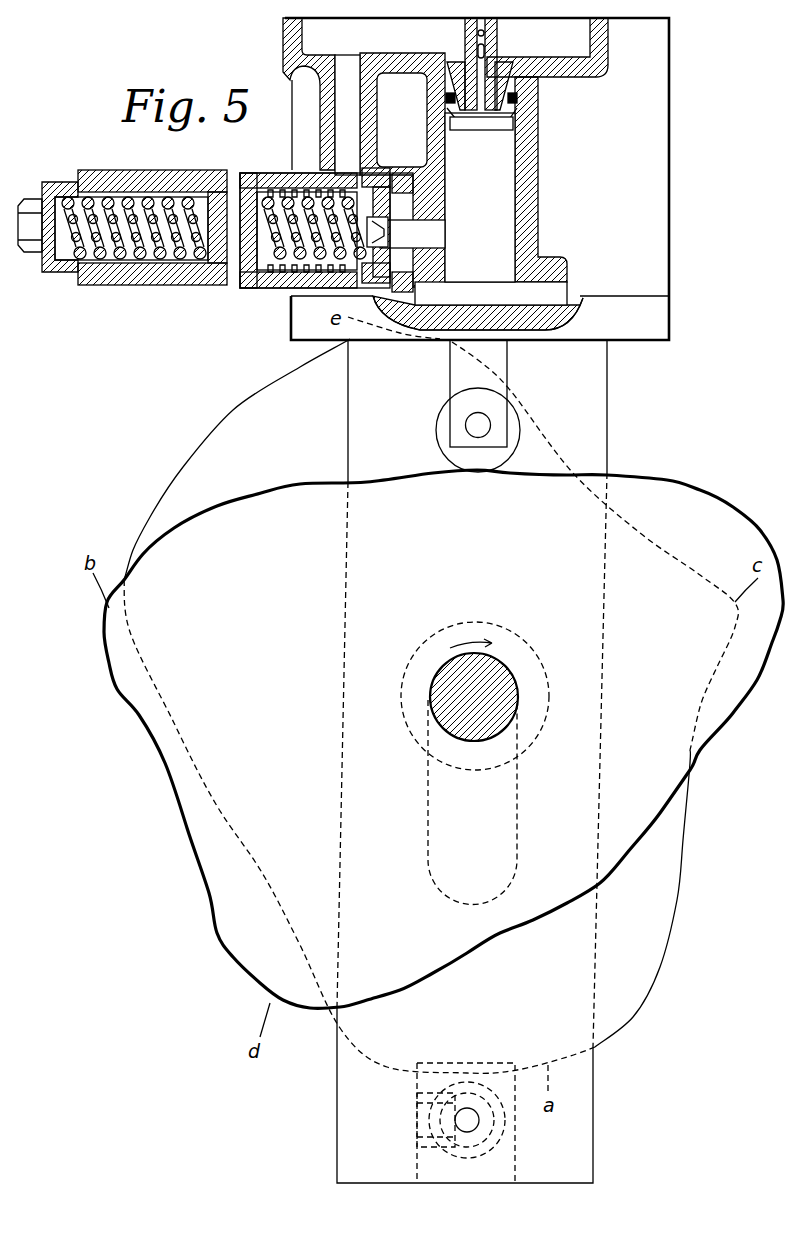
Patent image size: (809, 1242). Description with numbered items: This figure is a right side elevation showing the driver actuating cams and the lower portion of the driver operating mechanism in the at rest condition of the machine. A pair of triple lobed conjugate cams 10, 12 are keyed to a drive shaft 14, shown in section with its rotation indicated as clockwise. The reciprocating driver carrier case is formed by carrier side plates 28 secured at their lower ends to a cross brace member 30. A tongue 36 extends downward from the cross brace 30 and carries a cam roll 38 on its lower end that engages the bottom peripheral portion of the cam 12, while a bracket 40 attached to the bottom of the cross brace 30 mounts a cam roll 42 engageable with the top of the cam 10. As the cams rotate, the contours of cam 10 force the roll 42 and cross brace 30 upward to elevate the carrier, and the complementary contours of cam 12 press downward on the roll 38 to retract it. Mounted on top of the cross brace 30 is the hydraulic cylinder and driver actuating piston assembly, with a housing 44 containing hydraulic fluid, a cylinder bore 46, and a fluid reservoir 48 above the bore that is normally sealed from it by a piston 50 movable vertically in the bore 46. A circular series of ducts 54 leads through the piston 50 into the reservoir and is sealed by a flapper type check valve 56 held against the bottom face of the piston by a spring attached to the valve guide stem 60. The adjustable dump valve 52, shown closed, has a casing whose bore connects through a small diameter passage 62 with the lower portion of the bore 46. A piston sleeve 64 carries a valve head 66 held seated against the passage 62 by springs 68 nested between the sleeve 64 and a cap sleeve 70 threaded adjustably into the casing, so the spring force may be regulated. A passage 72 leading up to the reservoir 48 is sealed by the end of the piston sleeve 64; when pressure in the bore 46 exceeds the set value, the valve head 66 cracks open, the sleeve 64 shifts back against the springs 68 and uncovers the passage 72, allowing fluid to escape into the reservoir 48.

The triple lobed conjugate cam 10 is at (663, 480).
The triple lobed conjugate cam 12 is at (683, 892).
The drive shaft 14 is at (433, 693).
The carrier side plates 28 is at (672, 173).
The cross brace member 30 is at (614, 295).
The tongue 36 is at (597, 1105).
The cam roll 38 is at (500, 1143).
The bracket 40 is at (510, 367).
The cam roll 42 is at (435, 427).
The housing 44 is at (537, 156).
The cylinder bore 46 is at (517, 214).
The fluid reservoir 48 is at (323, 40).
The piston 50 is at (443, 85).
The dump valve 52 is at (270, 322).
The ducts 54 is at (462, 62).
The flapper type check valve 56 is at (493, 123).
The valve guide stem 60 is at (498, 33).
The small diameter passage 62 is at (425, 248).
The piston sleeve 64 is at (273, 280).
The valve head 66 is at (380, 235).
The springs 68 is at (63, 200).
The cap sleeve 70 is at (62, 267).
The passage 72 is at (340, 100).